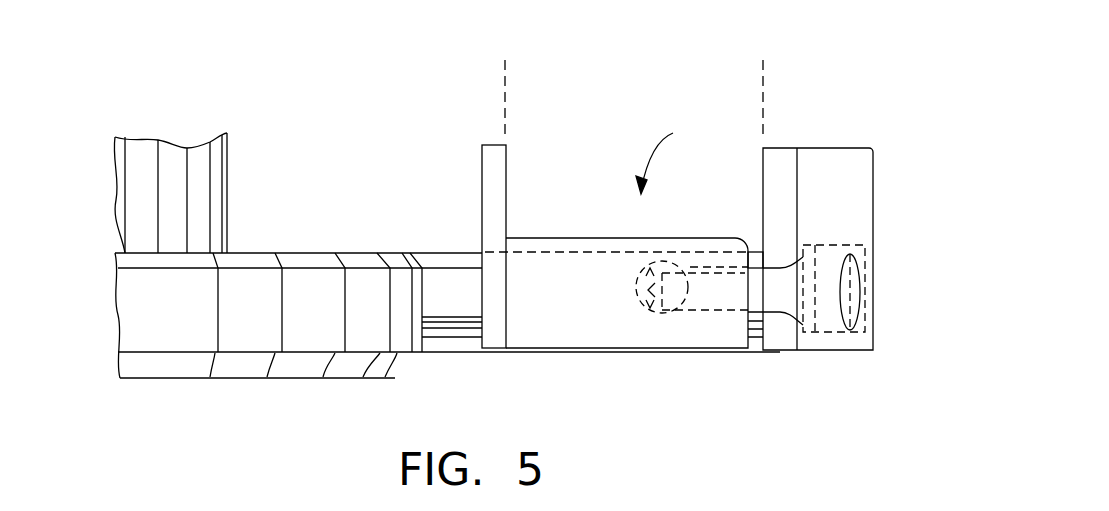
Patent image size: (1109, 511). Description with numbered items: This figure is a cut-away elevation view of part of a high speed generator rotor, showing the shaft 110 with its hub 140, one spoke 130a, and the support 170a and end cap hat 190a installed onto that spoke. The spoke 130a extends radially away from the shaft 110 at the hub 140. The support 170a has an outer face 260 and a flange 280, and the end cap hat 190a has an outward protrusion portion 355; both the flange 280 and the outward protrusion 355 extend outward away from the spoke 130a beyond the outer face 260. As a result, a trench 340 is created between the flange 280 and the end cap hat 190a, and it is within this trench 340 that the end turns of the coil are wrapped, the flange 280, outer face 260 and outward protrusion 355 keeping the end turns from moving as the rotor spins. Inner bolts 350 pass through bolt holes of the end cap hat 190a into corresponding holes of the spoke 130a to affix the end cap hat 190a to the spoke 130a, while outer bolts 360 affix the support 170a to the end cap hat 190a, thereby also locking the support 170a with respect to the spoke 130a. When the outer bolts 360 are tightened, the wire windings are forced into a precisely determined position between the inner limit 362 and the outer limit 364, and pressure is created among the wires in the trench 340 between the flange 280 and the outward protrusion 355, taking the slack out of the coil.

The shaft 110 is at (228, 158).
The hub 140 is at (287, 253).
The spoke 130a is at (455, 337).
The flange 280 is at (490, 143).
The support 170a is at (532, 237).
The outer face 260 is at (670, 243).
The inner bolts 350 is at (627, 278).
The outer bolts 360 is at (680, 320).
The end cap hat 190a is at (805, 148).
The outward protrusion portion 355 is at (880, 142).
The inner limit 362 is at (505, 80).
The outer limit 364 is at (763, 83).
The trench 340 is at (676, 159).